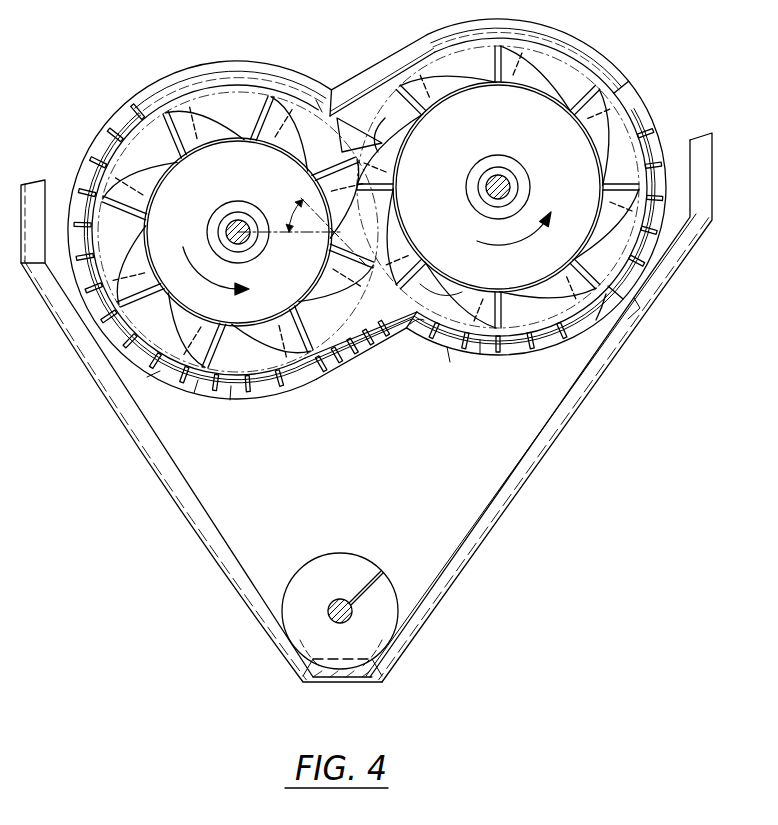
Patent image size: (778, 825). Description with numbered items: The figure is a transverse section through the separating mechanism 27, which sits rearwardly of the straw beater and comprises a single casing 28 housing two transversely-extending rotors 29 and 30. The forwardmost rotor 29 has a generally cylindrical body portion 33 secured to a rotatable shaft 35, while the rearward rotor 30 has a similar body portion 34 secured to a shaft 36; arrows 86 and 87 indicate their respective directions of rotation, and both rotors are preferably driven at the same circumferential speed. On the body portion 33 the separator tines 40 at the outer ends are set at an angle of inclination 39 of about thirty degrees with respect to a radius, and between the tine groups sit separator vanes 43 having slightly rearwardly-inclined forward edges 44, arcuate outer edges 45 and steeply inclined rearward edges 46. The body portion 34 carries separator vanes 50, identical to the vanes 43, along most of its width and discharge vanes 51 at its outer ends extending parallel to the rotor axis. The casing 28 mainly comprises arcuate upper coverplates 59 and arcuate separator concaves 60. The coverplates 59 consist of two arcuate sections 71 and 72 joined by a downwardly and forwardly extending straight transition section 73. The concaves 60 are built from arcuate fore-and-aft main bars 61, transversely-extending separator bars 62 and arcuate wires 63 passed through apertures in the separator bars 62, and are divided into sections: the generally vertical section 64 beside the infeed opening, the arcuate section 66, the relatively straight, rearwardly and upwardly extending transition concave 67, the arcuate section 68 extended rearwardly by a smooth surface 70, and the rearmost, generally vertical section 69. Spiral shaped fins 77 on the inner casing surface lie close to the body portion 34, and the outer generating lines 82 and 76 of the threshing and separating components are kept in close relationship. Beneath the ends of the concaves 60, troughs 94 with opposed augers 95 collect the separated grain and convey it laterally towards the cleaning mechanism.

The separating mechanism 27 is at (526, 488).
The casing 28 is at (369, 67).
The rotor 29 is at (266, 103).
The rotor 30 is at (553, 83).
The body portion 33 is at (238, 203).
The body portion 34 is at (419, 76).
The shaft 35 is at (226, 228).
The shaft 36 is at (513, 185).
The angle of inclination 39 is at (291, 212).
The separator tines 40 is at (73, 197).
The separator vanes 43 is at (180, 110).
The forward edges 44 is at (100, 160).
The outer edges 45 is at (110, 133).
The rearward edges 46 is at (145, 110).
The separator vanes 50 is at (627, 96).
The discharge vanes 51 is at (420, 282).
The coverplates 59 is at (292, 98).
The separator concaves 60 is at (147, 378).
The main bars 61 is at (160, 383).
The separator bars 62 is at (255, 402).
The wires 63 is at (230, 400).
The concave section 64 is at (70, 264).
The concave section 66 is at (195, 394).
The concave section 67 is at (355, 362).
The concave section 68 is at (416, 318).
The concave section 69 is at (653, 122).
The smooth surface 70 is at (652, 293).
The arcuate section 71 is at (197, 90).
The arcuate section 72 is at (616, 88).
The transition section 73 is at (345, 140).
The outer generating line 76 is at (378, 148).
The spiral shaped fin 77 is at (628, 319).
The outer generating line 82 is at (316, 100).
The arrow 86 is at (213, 283).
The arrow 87 is at (497, 248).
The troughs 94 is at (168, 484).
The augers 95 is at (345, 553).